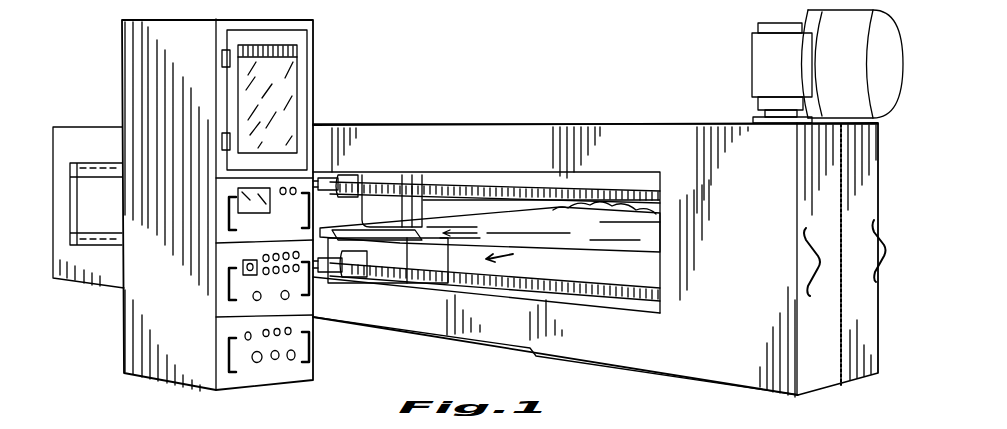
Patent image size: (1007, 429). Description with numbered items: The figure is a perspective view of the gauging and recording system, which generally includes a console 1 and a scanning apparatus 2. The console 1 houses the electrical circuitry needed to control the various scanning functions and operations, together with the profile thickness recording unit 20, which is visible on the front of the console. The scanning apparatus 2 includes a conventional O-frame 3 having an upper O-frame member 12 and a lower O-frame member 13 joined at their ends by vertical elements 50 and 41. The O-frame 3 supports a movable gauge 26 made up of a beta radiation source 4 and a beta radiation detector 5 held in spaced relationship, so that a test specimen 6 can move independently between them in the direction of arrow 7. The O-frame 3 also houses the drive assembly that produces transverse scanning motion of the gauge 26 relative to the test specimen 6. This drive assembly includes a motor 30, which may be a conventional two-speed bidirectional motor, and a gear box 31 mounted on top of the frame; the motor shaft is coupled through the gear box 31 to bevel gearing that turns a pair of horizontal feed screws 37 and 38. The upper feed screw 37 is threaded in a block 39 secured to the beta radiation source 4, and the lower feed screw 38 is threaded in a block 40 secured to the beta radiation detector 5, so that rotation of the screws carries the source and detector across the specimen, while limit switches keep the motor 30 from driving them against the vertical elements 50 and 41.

The console 1 is at (337, 28).
The scanning apparatus 2 is at (649, 64).
The O-frame 3 is at (437, 84).
The beta radiation source 4 is at (425, 258).
The beta radiation detector 5 is at (381, 200).
The test specimen 6 is at (663, 216).
The arrow 7 is at (515, 258).
The upper O-frame member 12 is at (486, 230).
The lower O-frame member 13 is at (486, 303).
The profile thickness recording unit 20 is at (288, 89).
The movable gauge 26 is at (549, 219).
The motor 30 is at (322, 424).
The gear box 31 is at (752, 86).
The upper horizontal feed screw 37 is at (578, 190).
The lower horizontal feed screw 38 is at (597, 297).
The block 39 is at (355, 177).
The block 40 is at (357, 280).
The vertical element 41 is at (58, 205).
The vertical element 50 is at (672, 252).